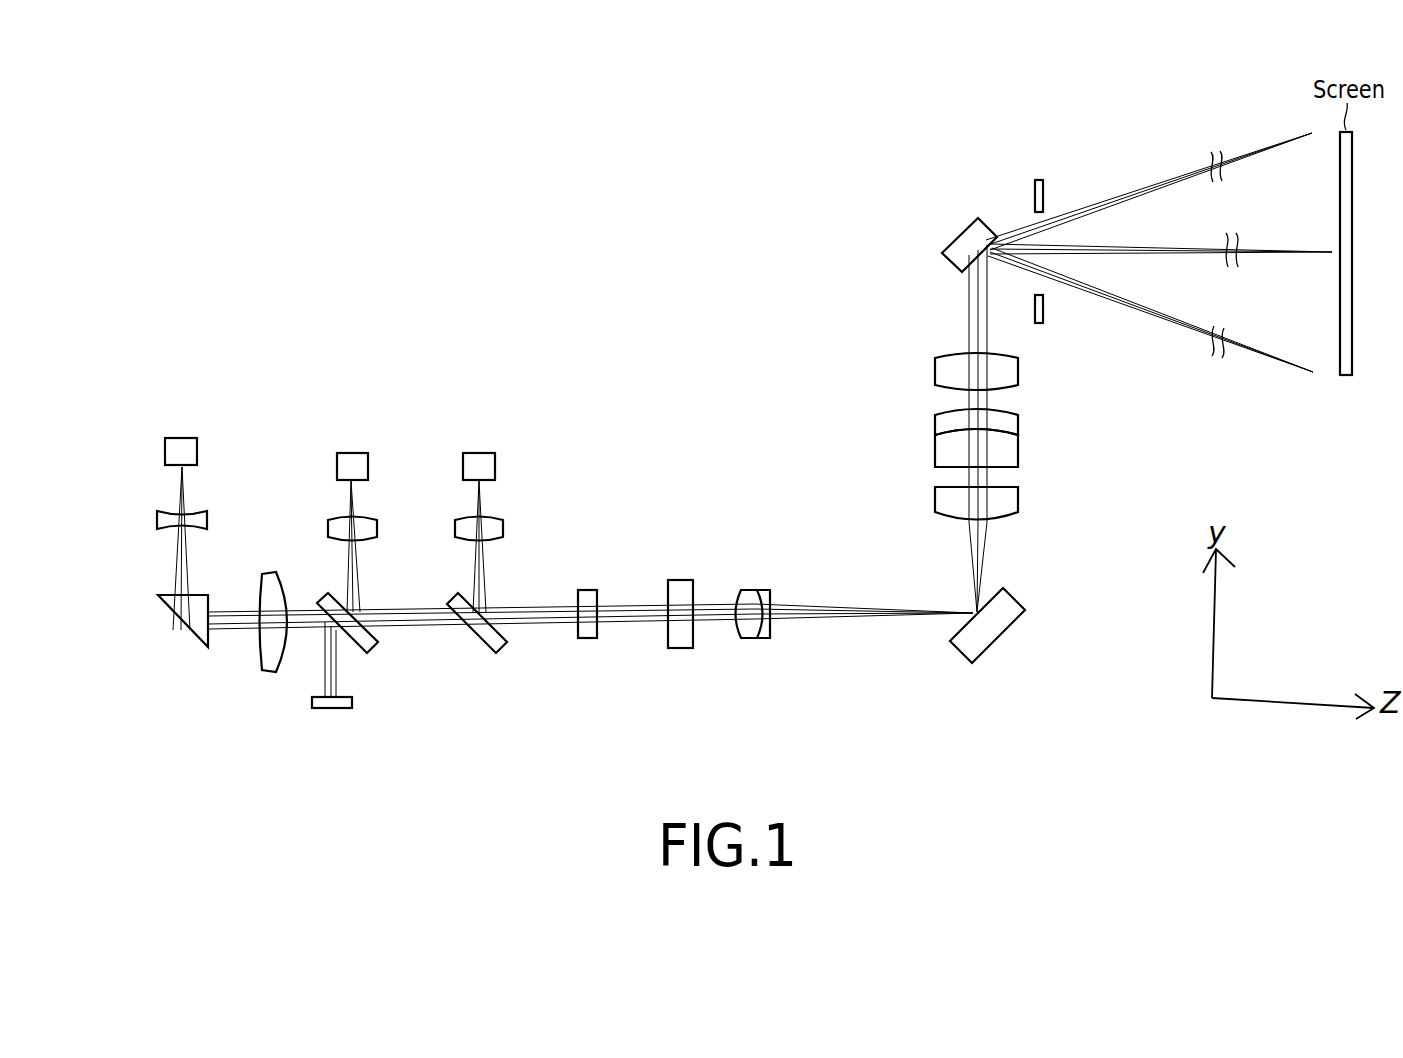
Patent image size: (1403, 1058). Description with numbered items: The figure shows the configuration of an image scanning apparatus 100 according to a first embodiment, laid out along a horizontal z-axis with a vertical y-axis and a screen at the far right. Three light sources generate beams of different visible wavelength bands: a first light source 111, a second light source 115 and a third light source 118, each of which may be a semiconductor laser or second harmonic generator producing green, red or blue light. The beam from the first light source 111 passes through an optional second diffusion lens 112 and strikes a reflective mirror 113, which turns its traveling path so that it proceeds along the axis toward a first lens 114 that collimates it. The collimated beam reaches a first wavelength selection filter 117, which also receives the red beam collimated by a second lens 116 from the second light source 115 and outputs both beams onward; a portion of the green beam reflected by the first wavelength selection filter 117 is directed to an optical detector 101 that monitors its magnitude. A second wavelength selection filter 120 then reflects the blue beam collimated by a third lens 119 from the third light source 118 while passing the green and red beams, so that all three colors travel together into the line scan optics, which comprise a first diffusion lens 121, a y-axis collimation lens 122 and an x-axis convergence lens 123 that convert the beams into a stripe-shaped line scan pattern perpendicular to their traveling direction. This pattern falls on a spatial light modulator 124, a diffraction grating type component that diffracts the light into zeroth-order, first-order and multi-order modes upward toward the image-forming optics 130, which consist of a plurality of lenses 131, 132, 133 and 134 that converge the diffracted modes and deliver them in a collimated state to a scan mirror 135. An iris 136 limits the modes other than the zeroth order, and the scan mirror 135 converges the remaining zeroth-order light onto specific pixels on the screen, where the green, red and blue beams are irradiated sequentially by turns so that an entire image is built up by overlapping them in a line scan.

The image scanning apparatus 100 is at (615, 289).
The optical detector 101 is at (334, 710).
The first light source 111 is at (163, 455).
The second diffusion lens 112 is at (155, 520).
The reflective mirror 113 is at (158, 596).
The first lens 114 is at (270, 675).
The second light source 115 is at (370, 466).
The second lens 116 is at (380, 528).
The first wavelength selection filter 117 is at (374, 650).
The third light source 118 is at (497, 466).
The third lens 119 is at (505, 528).
The second wavelength selection filter 120 is at (503, 650).
The first diffusion lens 121 is at (590, 641).
The y-axis collimation lens 122 is at (681, 650).
The x-axis convergence lens 123 is at (753, 642).
The spatial light modulator 124 is at (1001, 634).
The image-forming optics 130 is at (1047, 436).
The lens 131 is at (1020, 503).
The lens 132 is at (1020, 450).
The lens 133 is at (1020, 424).
The lens 134 is at (1012, 371).
The scan mirror 135 is at (955, 239).
The iris 136 is at (1037, 178).